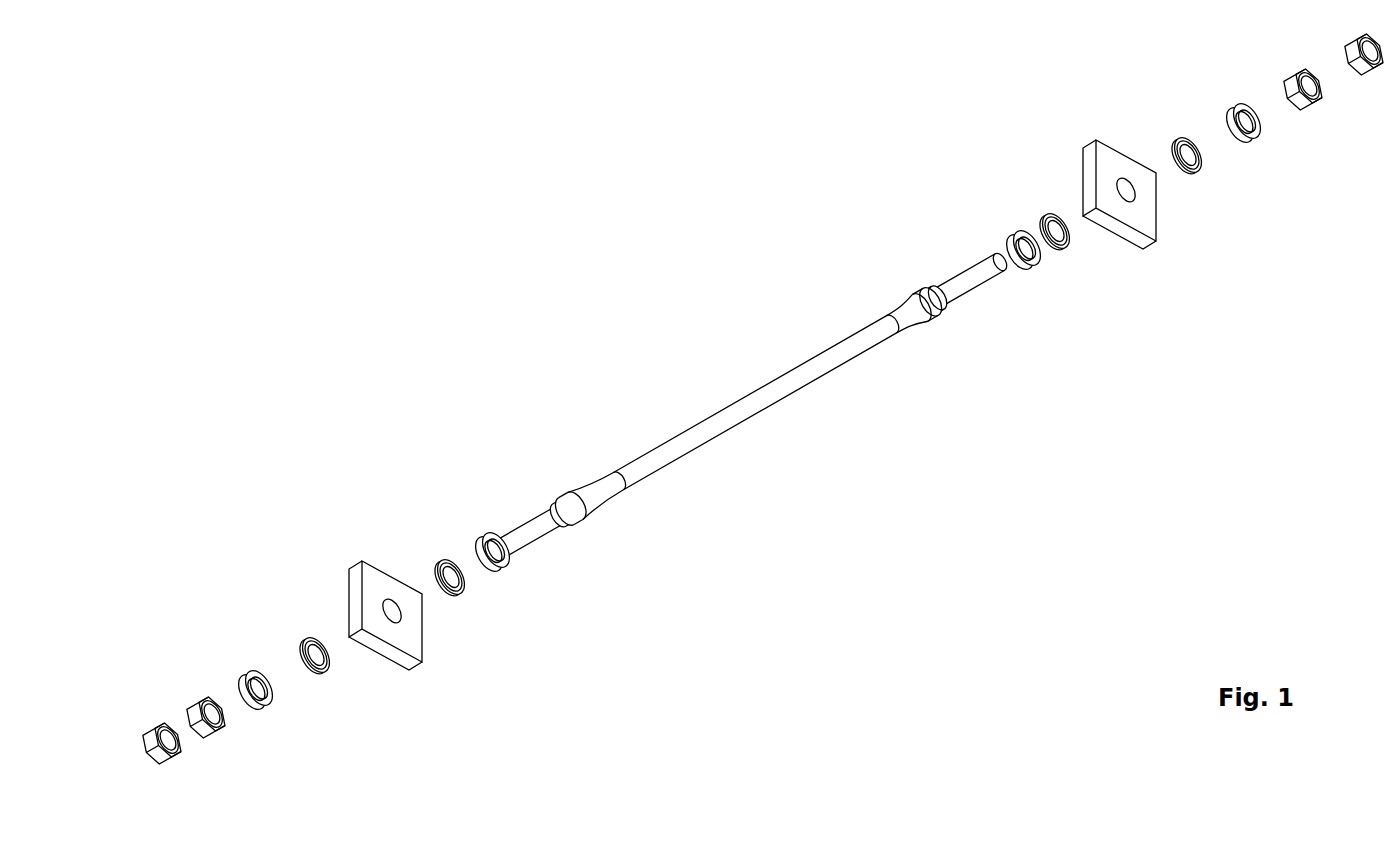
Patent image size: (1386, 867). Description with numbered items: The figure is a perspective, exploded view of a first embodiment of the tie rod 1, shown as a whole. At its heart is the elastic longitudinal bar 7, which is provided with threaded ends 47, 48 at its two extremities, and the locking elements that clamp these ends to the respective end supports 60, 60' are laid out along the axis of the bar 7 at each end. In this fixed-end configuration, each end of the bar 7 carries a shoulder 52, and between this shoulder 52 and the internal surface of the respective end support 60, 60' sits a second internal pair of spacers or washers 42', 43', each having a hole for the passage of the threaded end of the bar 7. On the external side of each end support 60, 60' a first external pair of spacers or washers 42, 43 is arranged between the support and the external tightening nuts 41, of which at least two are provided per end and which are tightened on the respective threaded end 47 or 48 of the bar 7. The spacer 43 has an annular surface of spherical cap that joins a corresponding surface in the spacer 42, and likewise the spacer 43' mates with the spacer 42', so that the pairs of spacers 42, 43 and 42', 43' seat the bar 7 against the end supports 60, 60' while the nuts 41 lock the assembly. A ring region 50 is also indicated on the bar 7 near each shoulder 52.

The tie rod 1 is at (690, 286).
The longitudinal bar 7 is at (790, 378).
The external tightening nuts 41 is at (213, 742).
The spacer 42 is at (772, 449).
The spacer 42' is at (774, 447).
The spacer 43 is at (769, 436).
The spacer 43' is at (782, 457).
The threaded end 47 is at (987, 266).
The threaded end 48 is at (526, 527).
The collar ring 50 is at (936, 290).
The shoulder 52 is at (945, 306).
The end support 60 is at (1113, 151).
The end support 60' is at (417, 658).